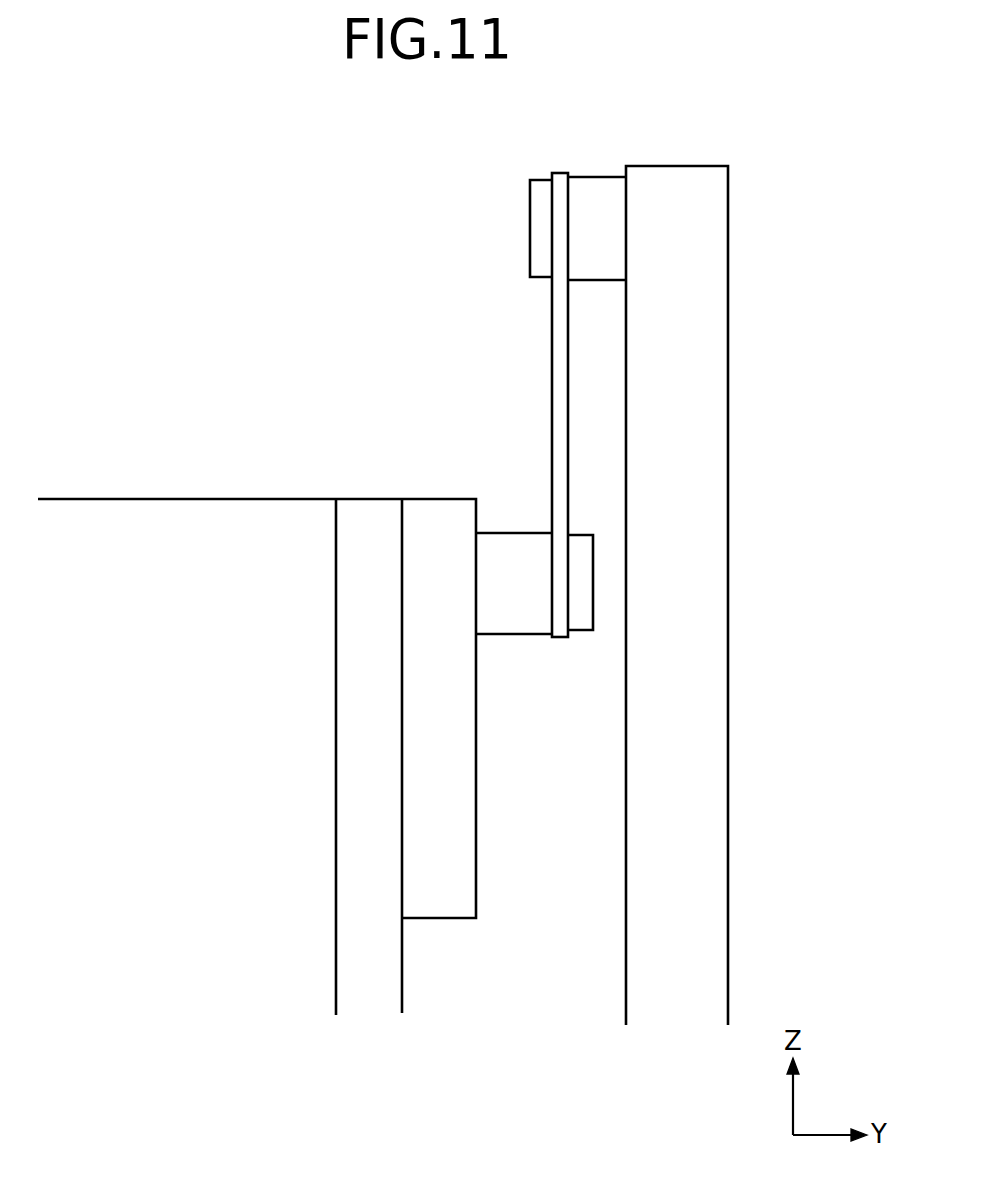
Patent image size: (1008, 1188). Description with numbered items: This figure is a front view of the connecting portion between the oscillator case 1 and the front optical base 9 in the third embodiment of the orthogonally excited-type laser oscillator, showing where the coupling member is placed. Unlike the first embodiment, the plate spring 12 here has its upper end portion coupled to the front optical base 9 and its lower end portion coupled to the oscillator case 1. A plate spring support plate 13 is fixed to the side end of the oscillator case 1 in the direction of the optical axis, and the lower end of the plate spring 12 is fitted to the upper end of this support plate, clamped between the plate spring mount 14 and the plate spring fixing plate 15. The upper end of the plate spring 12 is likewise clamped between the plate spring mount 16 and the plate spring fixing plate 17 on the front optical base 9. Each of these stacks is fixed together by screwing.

The oscillator case 1 is at (183, 499).
The front optical base 9 is at (728, 217).
The plate spring 12 is at (562, 173).
The plate spring support plate 13 is at (443, 499).
The plate spring mount 14 is at (527, 634).
The plate spring fixing plate 15 is at (583, 633).
The plate spring mount 16 is at (610, 177).
The plate spring fixing plate 17 is at (542, 180).